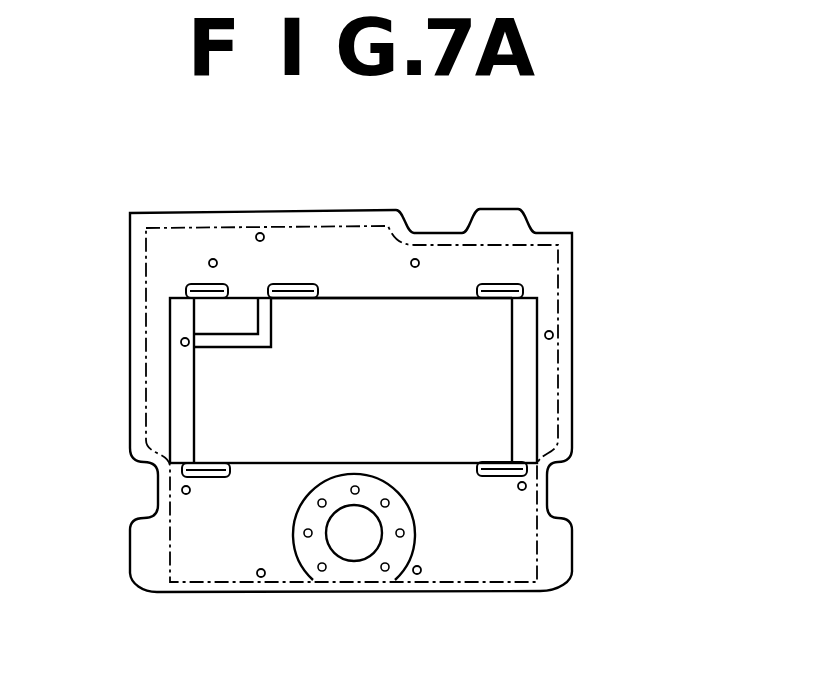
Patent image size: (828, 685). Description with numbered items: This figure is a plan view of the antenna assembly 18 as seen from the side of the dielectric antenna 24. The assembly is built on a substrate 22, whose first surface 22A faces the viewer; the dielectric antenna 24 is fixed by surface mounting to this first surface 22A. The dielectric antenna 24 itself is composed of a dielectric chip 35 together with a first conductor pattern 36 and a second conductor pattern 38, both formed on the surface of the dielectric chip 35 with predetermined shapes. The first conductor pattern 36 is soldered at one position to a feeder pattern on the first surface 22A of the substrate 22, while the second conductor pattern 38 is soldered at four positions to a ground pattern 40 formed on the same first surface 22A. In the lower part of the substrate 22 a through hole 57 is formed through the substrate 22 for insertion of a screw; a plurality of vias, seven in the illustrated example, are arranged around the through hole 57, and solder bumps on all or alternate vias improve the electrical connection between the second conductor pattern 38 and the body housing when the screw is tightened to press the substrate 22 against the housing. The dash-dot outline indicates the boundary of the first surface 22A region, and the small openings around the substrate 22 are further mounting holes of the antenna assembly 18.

The antenna assembly 18 is at (566, 198).
The substrate 22 is at (574, 283).
The first surface 22A is at (547, 375).
The dielectric antenna 24 is at (369, 296).
The dielectric chip 35 is at (178, 314).
The first conductor pattern 36 is at (243, 310).
The second conductor pattern 38 is at (440, 315).
The ground pattern 40 is at (504, 515).
The through hole 57 is at (350, 556).